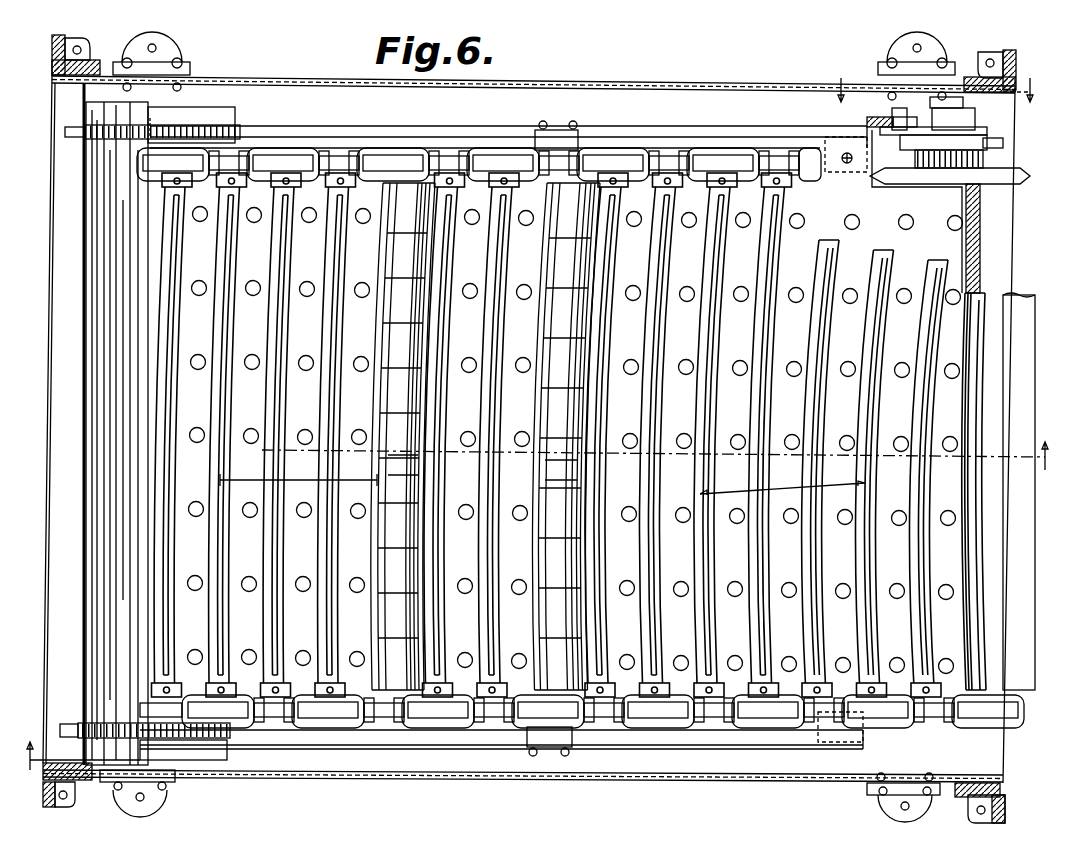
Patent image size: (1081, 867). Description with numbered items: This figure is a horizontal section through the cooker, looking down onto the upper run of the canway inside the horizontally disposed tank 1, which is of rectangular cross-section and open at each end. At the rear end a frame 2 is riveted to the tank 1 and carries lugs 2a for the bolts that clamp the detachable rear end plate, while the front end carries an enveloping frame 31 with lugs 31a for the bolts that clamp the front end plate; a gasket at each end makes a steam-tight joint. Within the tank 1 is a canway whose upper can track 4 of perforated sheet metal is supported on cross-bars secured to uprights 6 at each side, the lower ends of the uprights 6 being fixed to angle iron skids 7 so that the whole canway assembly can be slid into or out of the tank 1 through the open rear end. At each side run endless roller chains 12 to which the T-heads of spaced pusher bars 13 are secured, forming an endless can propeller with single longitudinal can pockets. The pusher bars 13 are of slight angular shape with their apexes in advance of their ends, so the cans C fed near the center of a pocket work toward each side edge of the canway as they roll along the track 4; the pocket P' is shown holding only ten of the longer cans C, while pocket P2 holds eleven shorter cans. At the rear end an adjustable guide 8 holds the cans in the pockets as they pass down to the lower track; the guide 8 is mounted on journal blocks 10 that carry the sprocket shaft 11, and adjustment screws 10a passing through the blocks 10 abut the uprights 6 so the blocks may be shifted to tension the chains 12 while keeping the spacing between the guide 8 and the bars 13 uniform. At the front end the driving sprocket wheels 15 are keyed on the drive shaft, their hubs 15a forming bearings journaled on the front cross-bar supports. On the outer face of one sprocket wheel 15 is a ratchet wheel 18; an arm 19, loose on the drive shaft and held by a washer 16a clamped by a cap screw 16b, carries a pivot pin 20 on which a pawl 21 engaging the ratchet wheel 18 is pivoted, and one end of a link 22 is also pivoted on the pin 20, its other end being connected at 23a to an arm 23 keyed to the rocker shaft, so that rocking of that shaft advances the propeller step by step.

The tank 1 is at (635, 79).
The frame 2 is at (55, 68).
The lugs 2a is at (85, 55).
The upper can track 4 is at (445, 112).
The uprights 6 is at (262, 140).
The angle iron skids 7 is at (614, 135).
The adjustable guide 8 is at (114, 403).
The journal blocks 10 is at (195, 107).
The adjustment screws 10a is at (65, 132).
The sprocket shaft 11 is at (948, 80).
The endless roller chains 12 is at (155, 160).
The pusher bars 13 is at (318, 462).
The driving sprocket wheels 15 is at (1030, 177).
The hubs 15a is at (991, 214).
The washer 16a is at (932, 112).
The cap screw 16b is at (950, 97).
The ratchet wheel 18 is at (1003, 143).
The arm 19 is at (988, 124).
The pivot pin 20 is at (988, 153).
The pawl 21 is at (950, 168).
The link 22 is at (890, 128).
The arm 23 is at (856, 124).
The pivotal connection 23a is at (898, 132).
The enveloping frame 31 is at (1016, 62).
The lugs 31a is at (1005, 810).
The can pocket P2 is at (387, 350).
The can pocket P' is at (555, 436).
The cans C is at (420, 565).